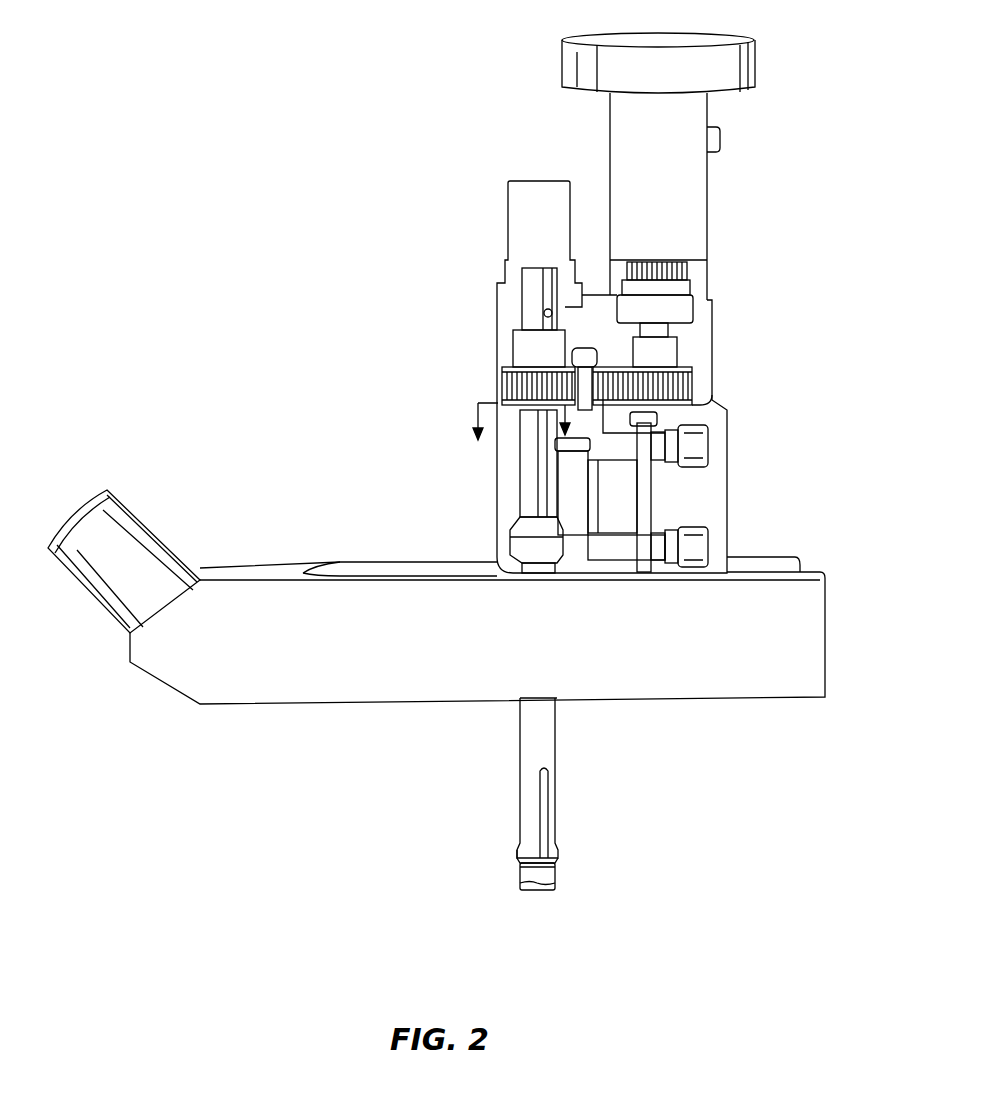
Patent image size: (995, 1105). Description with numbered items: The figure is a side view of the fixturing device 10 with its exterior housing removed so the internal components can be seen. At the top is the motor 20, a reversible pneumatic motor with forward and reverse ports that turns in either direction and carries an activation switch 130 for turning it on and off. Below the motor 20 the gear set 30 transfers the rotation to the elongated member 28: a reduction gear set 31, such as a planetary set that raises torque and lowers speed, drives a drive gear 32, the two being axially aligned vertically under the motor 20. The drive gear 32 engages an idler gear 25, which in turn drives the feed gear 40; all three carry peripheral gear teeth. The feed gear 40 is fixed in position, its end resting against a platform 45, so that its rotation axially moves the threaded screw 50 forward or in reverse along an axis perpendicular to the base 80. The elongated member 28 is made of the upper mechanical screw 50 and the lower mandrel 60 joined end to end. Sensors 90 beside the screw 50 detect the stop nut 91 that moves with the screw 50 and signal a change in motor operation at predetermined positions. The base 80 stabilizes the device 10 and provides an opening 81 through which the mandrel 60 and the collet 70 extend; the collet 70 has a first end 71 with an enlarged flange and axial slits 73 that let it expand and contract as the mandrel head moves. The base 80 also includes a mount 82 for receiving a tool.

The device 10 is at (278, 190).
The activation switch 130 is at (720, 135).
The motor 20 is at (707, 178).
The reduction gear set 31 is at (683, 270).
The gear set 30 is at (726, 318).
The feed gear 40 is at (520, 390).
The idler gear 25 is at (640, 382).
The drive gear 32 is at (650, 388).
The platform 45 is at (523, 412).
The screw 50 is at (523, 452).
The elongated member 28 is at (510, 478).
The stop nut 91 is at (530, 552).
The sensors 90 is at (657, 547).
The mount 82 is at (335, 560).
The base 80 is at (780, 597).
The opening 81 is at (532, 698).
The collet 70 is at (555, 785).
The axial slits 73 is at (545, 820).
The first end 71 is at (555, 860).
The mandrel 60 is at (530, 875).